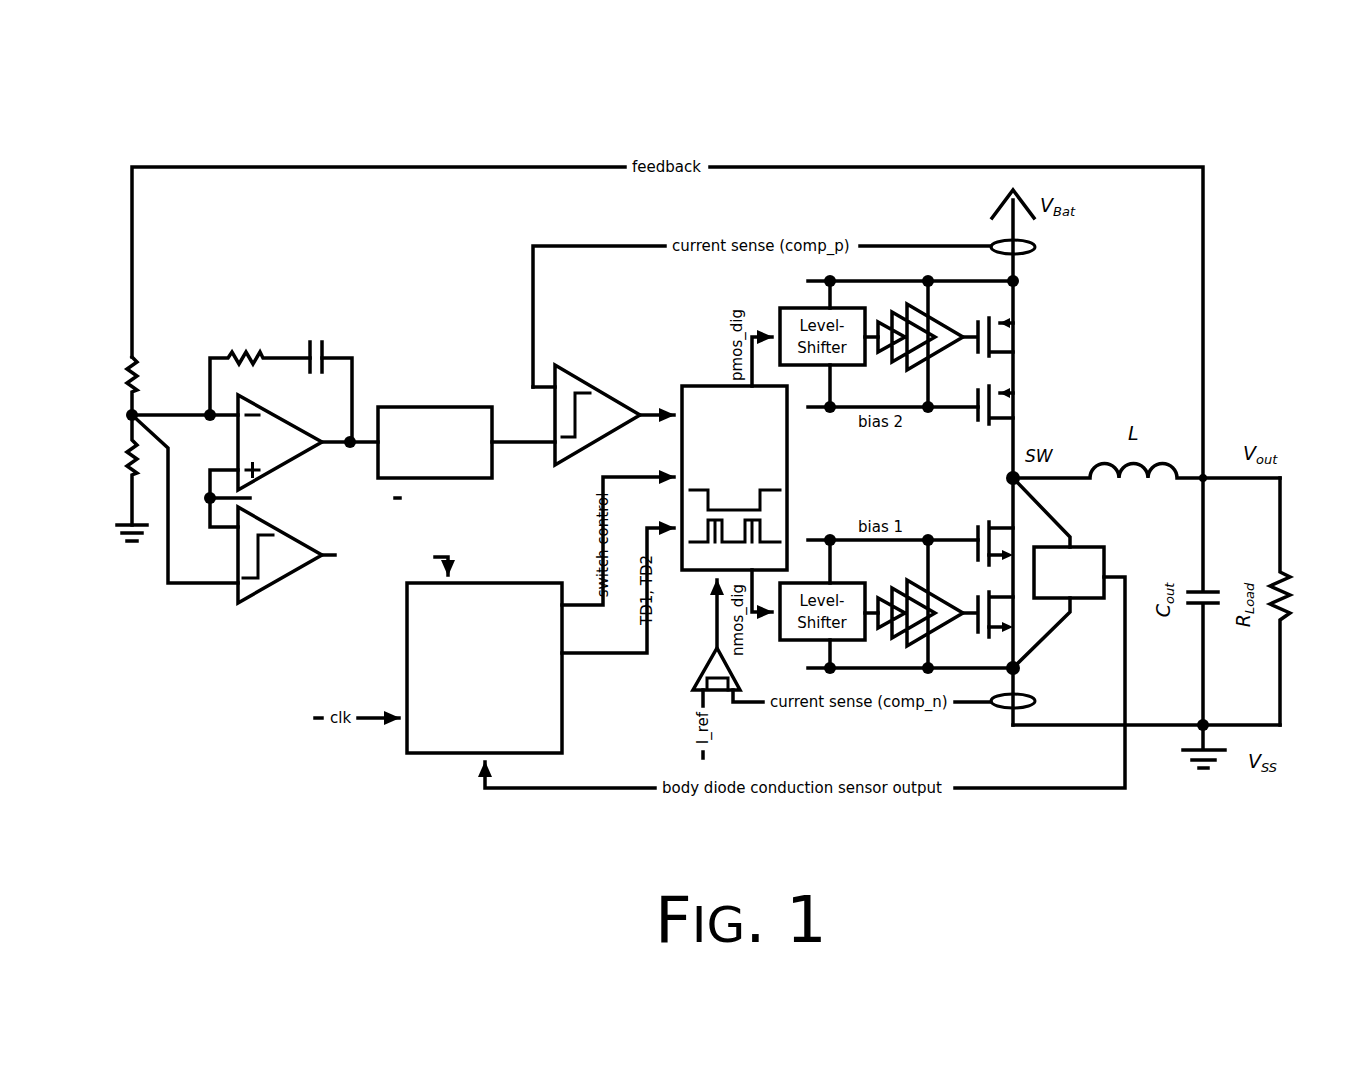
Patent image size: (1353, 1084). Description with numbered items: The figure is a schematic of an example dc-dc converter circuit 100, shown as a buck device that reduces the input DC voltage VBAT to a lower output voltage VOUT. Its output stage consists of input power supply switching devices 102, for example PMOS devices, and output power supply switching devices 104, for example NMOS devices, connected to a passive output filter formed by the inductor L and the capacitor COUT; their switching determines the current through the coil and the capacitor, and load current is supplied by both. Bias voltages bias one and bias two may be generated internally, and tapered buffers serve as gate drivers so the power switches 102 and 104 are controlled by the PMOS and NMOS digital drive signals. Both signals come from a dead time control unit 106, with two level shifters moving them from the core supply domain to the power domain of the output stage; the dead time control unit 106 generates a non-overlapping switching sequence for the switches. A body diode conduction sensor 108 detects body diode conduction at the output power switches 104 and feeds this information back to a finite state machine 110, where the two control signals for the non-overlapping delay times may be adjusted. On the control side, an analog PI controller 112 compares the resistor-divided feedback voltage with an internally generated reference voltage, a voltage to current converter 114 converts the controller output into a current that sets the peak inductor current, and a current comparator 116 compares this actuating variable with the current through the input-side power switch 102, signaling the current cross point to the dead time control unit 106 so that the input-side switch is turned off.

The dc-dc converter circuit 100 is at (1192, 126).
The input power supply switching devices 102 is at (1024, 387).
The output power supply switching devices 104 is at (972, 586).
The dead time control unit 106 is at (787, 462).
The body diode conduction sensor 108 is at (1085, 547).
The finite state machine 110 is at (487, 582).
The analog PI controller 112 is at (325, 610).
The voltage to current converter 114 is at (413, 405).
The current comparator 116 is at (572, 367).